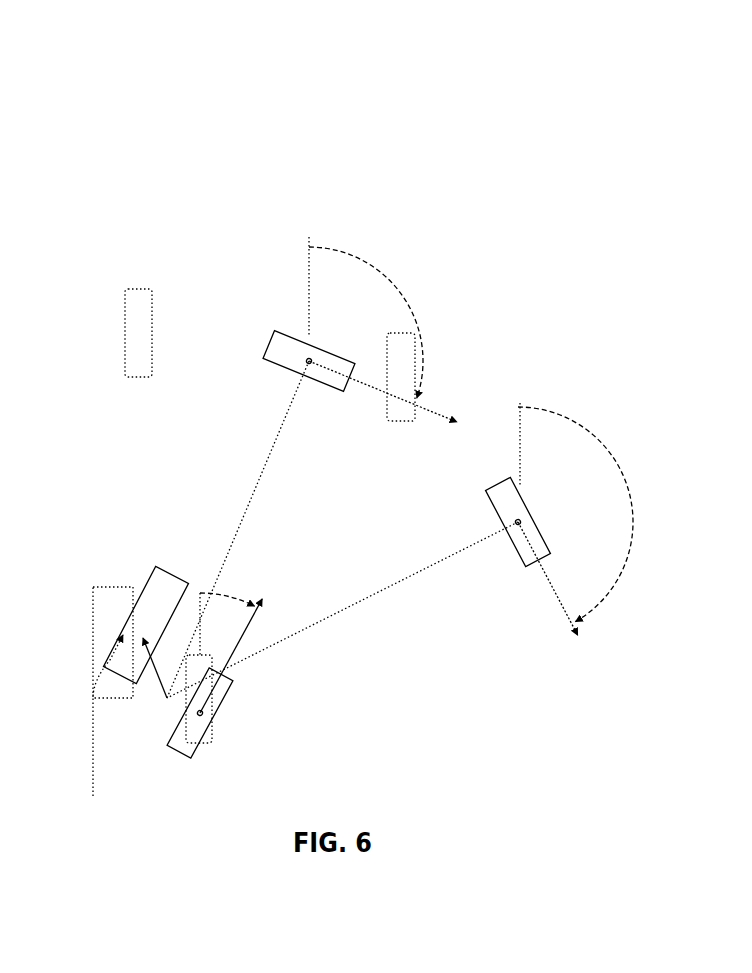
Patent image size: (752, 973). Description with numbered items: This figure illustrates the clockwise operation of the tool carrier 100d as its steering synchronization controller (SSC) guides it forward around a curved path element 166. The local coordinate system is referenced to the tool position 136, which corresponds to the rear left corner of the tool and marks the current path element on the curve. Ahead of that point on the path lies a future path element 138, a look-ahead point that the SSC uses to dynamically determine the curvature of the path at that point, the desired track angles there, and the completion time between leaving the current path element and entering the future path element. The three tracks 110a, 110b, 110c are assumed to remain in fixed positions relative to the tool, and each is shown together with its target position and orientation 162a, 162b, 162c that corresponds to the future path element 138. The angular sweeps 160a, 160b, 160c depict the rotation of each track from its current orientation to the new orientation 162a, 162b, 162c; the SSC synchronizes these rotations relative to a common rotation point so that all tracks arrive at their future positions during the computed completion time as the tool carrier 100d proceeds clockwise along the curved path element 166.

The tool carrier 100d is at (104, 67).
The track 110a is at (152, 330).
The track 110b is at (387, 355).
The track 110c is at (212, 743).
The rotation of track 160a is at (380, 273).
The rotation of track 160b is at (563, 418).
The rotation of track 160c is at (233, 592).
The track position/orientation 162a is at (268, 345).
The track position/orientation 162b is at (532, 515).
The track position/orientation 162c is at (225, 703).
The future path element 138 is at (91, 662).
The tool position 136 is at (93, 698).
The curved path element 166 is at (93, 767).